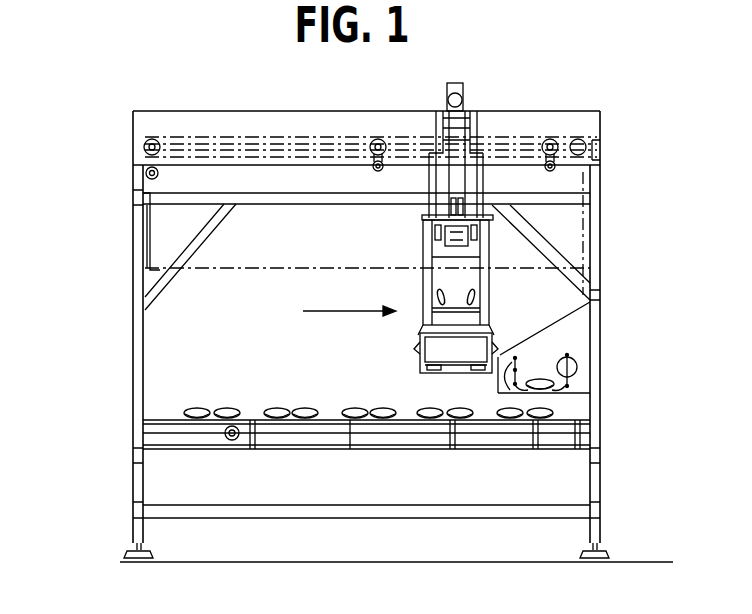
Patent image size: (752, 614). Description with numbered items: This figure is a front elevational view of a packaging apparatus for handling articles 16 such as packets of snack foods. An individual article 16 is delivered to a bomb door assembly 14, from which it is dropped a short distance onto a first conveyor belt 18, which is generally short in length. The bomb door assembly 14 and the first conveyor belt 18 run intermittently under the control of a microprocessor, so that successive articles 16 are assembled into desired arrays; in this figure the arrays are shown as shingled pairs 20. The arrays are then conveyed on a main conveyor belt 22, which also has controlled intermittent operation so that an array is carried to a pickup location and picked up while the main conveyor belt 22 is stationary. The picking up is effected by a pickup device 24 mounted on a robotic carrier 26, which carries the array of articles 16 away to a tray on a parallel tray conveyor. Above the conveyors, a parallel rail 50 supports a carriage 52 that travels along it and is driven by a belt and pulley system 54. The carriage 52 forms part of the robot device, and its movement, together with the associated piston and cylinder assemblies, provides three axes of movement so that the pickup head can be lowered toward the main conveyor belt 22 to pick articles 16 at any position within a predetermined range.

The bomb door assembly 14 is at (563, 338).
The article 16 is at (540, 380).
The first conveyor belt 18 is at (590, 416).
The shingled pairs 20 is at (320, 390).
The main conveyor belt 22 is at (170, 415).
The pickup device 24 is at (420, 345).
The robotic carrier 26 is at (423, 252).
The parallel rail 50 is at (133, 160).
The carriage 52 is at (403, 137).
The belt and pulley system 54 is at (145, 140).